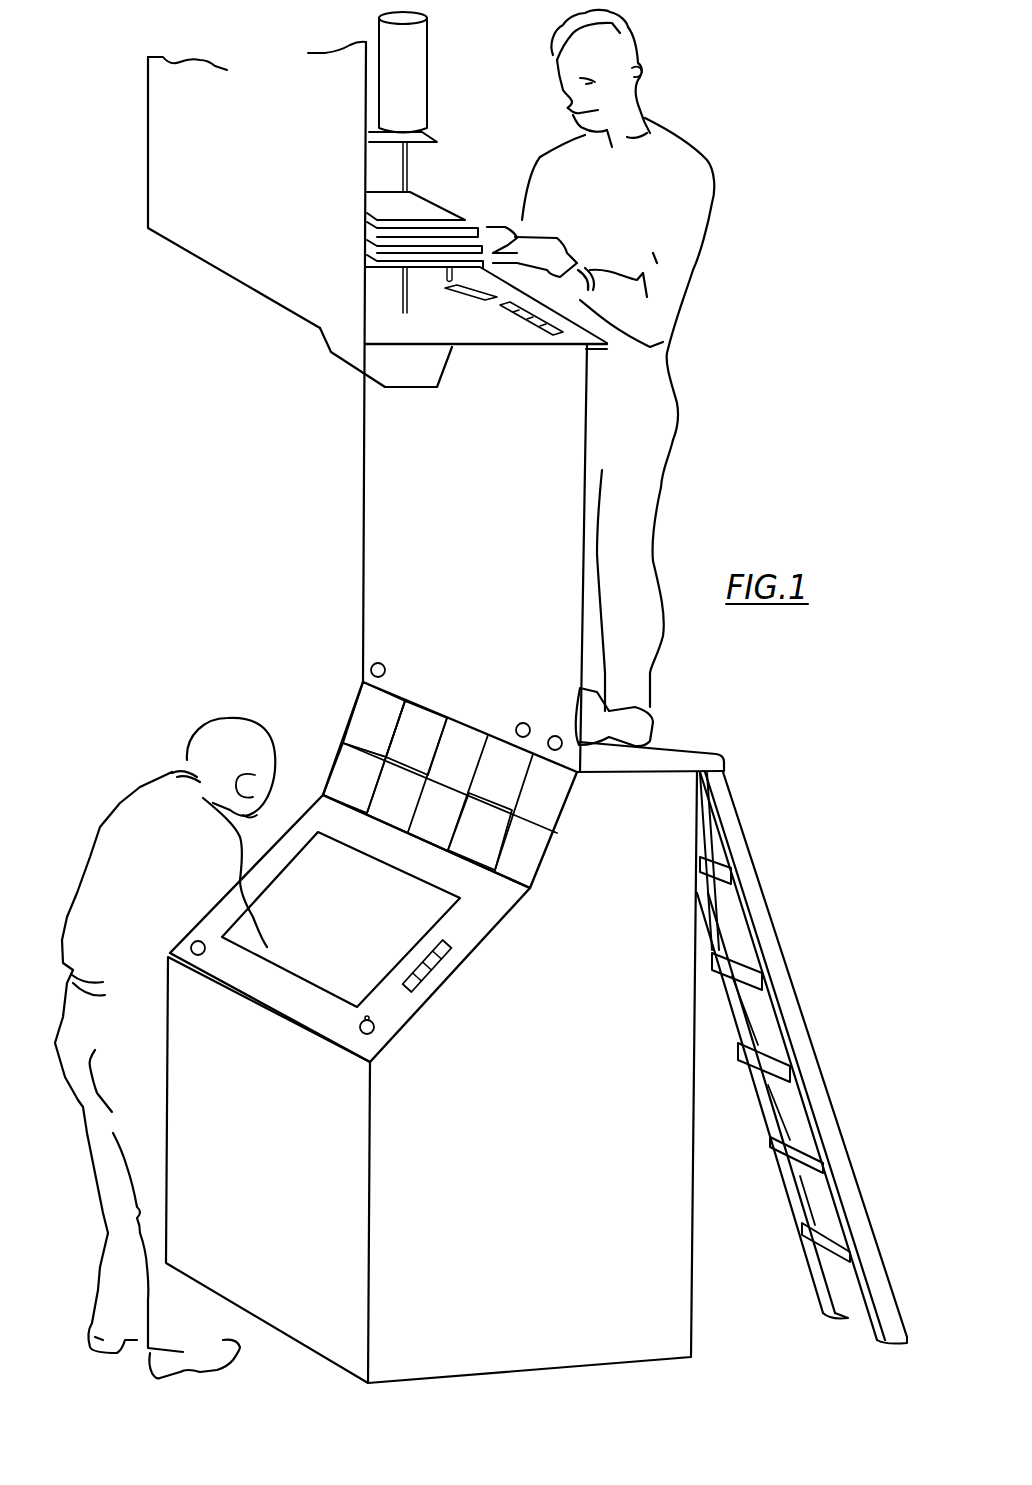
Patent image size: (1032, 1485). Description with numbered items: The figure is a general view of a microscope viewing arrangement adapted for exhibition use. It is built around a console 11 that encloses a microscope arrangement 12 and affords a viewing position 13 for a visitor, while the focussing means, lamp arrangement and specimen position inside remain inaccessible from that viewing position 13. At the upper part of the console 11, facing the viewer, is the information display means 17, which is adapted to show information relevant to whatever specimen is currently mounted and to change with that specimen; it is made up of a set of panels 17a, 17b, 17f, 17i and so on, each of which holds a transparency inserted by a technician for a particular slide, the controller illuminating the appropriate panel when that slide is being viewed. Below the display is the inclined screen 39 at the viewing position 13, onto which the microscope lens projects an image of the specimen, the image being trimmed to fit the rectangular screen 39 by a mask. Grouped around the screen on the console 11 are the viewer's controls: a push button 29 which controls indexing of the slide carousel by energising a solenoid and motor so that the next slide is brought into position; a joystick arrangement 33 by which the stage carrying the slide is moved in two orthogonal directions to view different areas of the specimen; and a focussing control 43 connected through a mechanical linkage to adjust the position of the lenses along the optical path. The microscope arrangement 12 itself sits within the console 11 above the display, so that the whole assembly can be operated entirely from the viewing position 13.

The console 11 is at (308, 774).
The microscope arrangement 12 is at (447, 86).
The viewing position 13 is at (234, 882).
The information display means 17 is at (343, 730).
The panel 17a is at (374, 719).
The panel 17b is at (416, 738).
The panel 17f is at (354, 778).
The panel 17i is at (480, 831).
The push button 29 is at (450, 950).
The joystick arrangement 33 is at (375, 1024).
The inclined screen 39 is at (425, 918).
The focussing control 43 is at (200, 955).